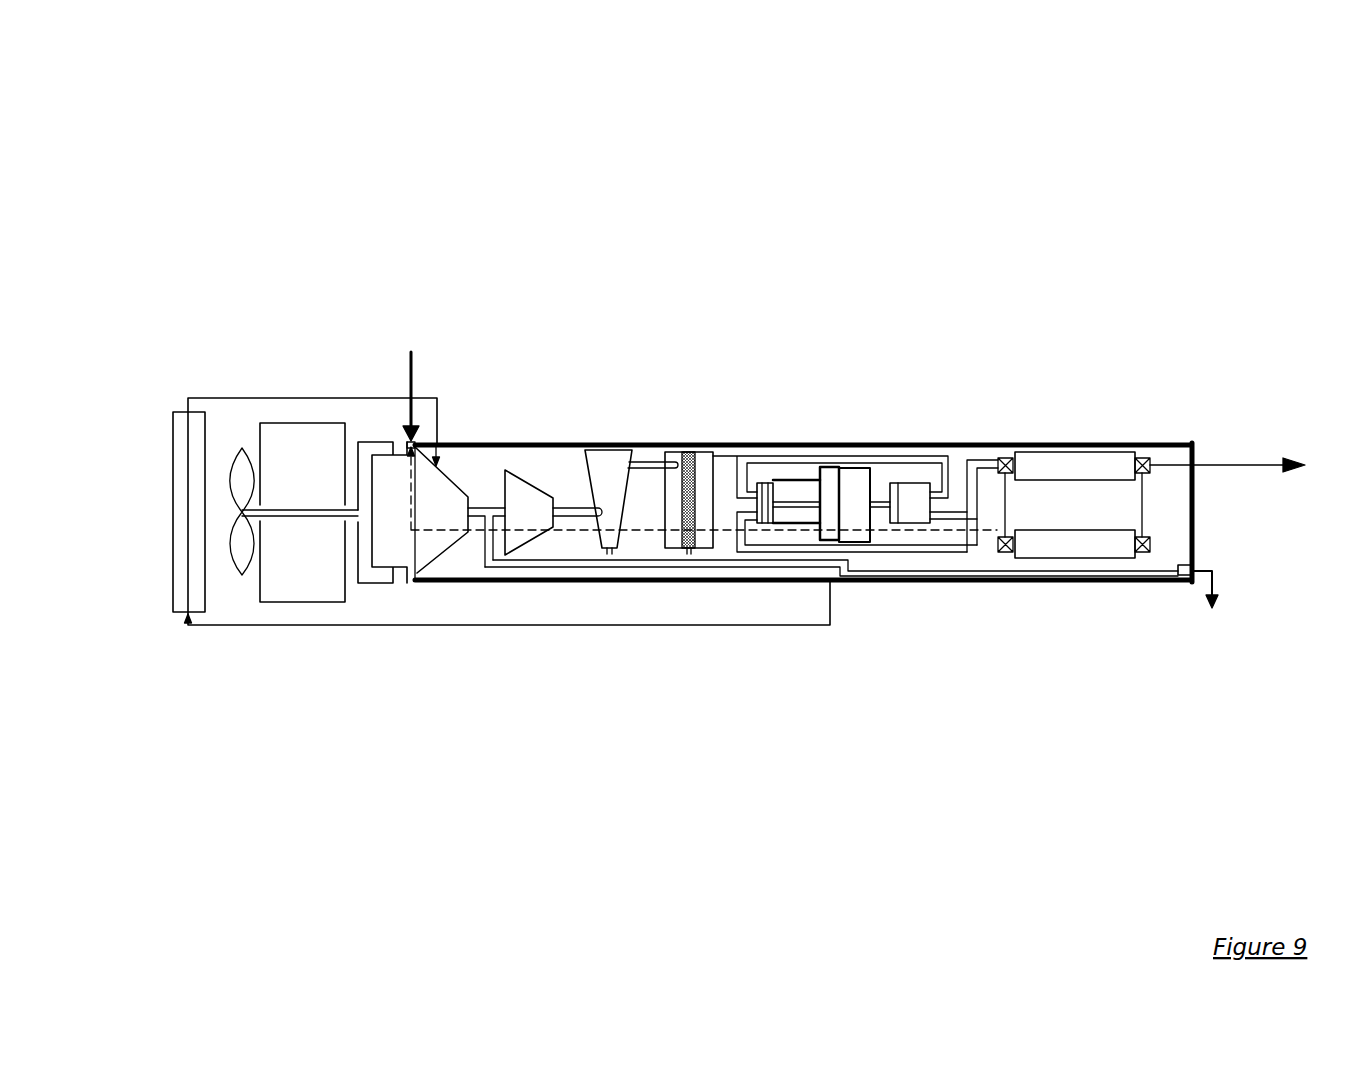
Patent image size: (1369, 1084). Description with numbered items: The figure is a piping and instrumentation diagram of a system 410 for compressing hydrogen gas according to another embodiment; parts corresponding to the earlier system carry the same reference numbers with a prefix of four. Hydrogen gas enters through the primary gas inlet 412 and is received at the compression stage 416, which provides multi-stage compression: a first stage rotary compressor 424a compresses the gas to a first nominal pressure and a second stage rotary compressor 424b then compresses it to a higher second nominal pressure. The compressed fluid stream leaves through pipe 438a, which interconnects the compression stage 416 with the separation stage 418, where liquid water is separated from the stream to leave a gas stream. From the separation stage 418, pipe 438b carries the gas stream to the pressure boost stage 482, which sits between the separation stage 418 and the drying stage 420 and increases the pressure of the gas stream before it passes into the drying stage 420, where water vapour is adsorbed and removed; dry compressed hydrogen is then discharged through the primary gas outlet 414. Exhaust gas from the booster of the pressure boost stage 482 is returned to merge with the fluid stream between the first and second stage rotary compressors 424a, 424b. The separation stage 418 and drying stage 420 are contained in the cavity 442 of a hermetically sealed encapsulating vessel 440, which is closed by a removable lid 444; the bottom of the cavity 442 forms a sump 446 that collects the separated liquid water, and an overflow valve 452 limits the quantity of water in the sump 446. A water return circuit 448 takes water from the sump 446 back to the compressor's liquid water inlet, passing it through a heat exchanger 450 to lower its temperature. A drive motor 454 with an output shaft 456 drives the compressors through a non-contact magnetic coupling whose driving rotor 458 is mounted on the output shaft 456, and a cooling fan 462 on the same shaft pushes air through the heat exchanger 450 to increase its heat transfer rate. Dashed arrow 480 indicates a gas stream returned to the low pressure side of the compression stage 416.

The system for compressing hydrogen gas 410 is at (1083, 233).
The primary gas inlet 412 is at (411, 350).
The primary gas outlet 414 is at (1242, 458).
The compression stage 416 is at (507, 452).
The separation stage 418 is at (636, 428).
The drying stage 420 is at (996, 432).
The first stage rotary compressor 424a is at (428, 546).
The second stage rotary compressor 424b is at (512, 548).
The pipe 438a is at (590, 552).
The pipe 438b is at (982, 462).
The encapsulating vessel 440 is at (1062, 422).
The cavity 442 is at (1052, 513).
The removable lid 444 is at (1148, 443).
The sump 446 is at (945, 561).
The water return circuit 448 is at (215, 396).
The heat exchanger 450 is at (180, 585).
The overflow valve 452 is at (1188, 583).
The drive motor 454 is at (308, 603).
The output shaft 456 is at (352, 505).
The driving rotor 458 is at (375, 577).
The cooling fan 462 is at (247, 448).
The dashed arrow 480 is at (995, 530).
The pressure boost stage 482 is at (781, 432).